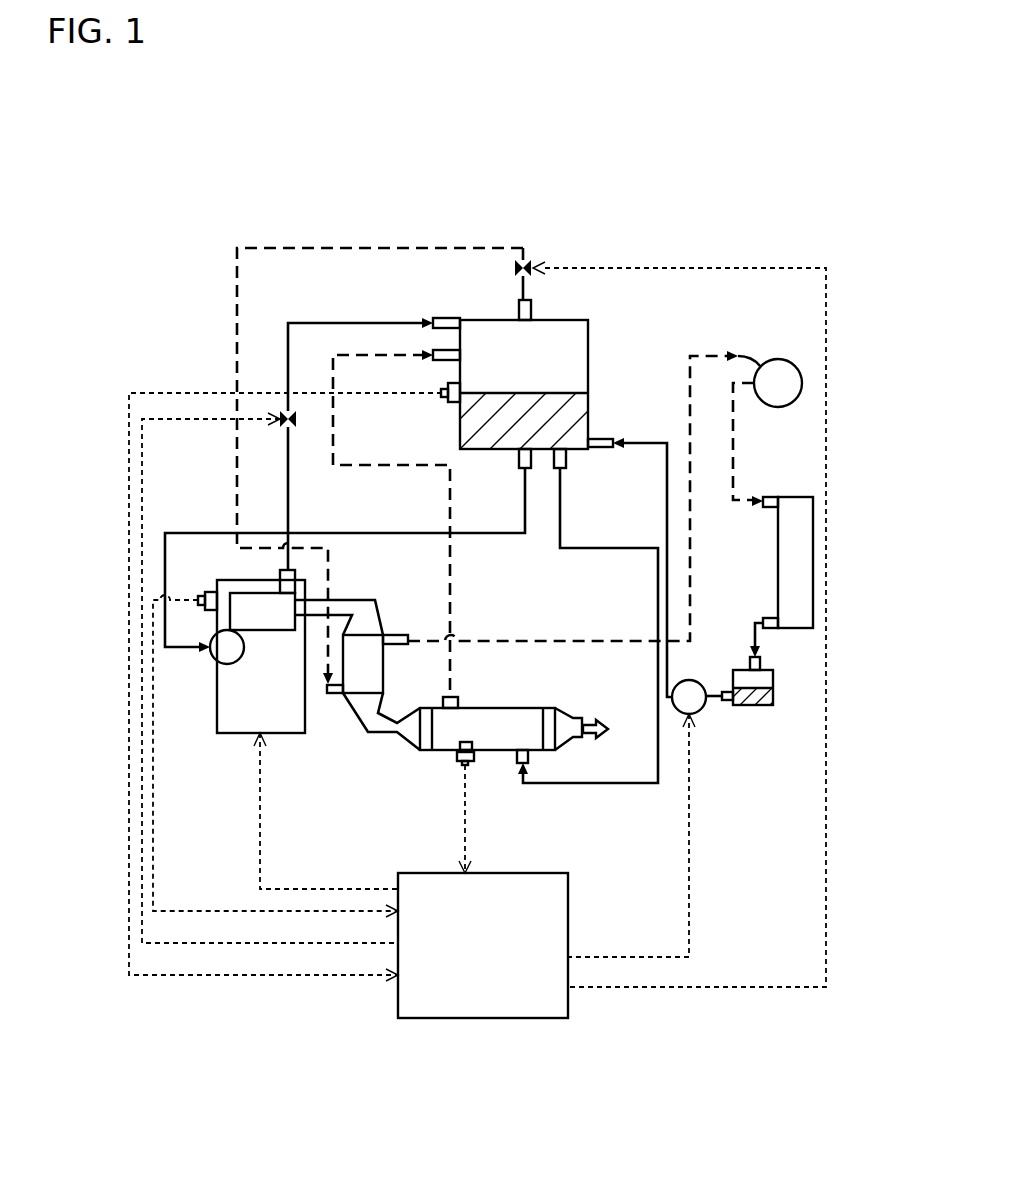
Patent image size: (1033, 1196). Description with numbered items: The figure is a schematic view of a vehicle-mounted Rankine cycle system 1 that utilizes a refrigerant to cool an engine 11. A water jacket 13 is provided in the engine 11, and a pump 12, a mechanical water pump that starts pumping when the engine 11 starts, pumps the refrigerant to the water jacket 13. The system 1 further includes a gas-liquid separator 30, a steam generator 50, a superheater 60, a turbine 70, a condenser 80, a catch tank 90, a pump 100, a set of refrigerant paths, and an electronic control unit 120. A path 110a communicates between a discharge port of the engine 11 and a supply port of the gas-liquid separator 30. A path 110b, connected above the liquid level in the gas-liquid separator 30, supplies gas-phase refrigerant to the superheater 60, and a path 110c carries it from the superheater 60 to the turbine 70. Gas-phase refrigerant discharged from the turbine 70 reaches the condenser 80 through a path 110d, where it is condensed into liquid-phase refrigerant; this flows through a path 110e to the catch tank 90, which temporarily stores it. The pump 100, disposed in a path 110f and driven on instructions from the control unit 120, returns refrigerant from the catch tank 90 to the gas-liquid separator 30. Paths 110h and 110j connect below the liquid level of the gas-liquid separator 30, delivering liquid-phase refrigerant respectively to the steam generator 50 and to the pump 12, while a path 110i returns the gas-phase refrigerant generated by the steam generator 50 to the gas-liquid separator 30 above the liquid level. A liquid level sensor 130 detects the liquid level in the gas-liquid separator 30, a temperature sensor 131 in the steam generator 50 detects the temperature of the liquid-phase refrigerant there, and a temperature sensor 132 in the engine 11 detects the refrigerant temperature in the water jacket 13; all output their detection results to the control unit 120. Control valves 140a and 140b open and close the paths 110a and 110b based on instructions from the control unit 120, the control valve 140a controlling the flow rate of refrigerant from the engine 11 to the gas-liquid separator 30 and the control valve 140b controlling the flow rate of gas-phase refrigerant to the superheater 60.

The rankine cycle system 1 is at (170, 165).
The engine 11 is at (230, 733).
The pump 12 is at (211, 657).
The water jacket 13 is at (272, 631).
The gas-liquid separator 30 is at (553, 317).
The steam generator 50 is at (435, 752).
The superheater 60 is at (385, 668).
The turbine 70 is at (777, 360).
The condenser 80 is at (778, 559).
The catch tank 90 is at (773, 703).
The pump 100 is at (695, 713).
The path 110a is at (322, 322).
The path 110b is at (351, 247).
The path 110c is at (503, 641).
The path 110d is at (733, 443).
The path 110e is at (755, 636).
The path 110f is at (667, 525).
The path 110h is at (559, 530).
The path 110i is at (450, 568).
The path 110j is at (406, 533).
The ECU 120 is at (505, 873).
The liquid level sensor 130 is at (447, 402).
The temperature sensor 131 is at (472, 766).
The temperature sensor 132 is at (205, 597).
The control valve 140a is at (292, 428).
The control valve 140b is at (531, 263).